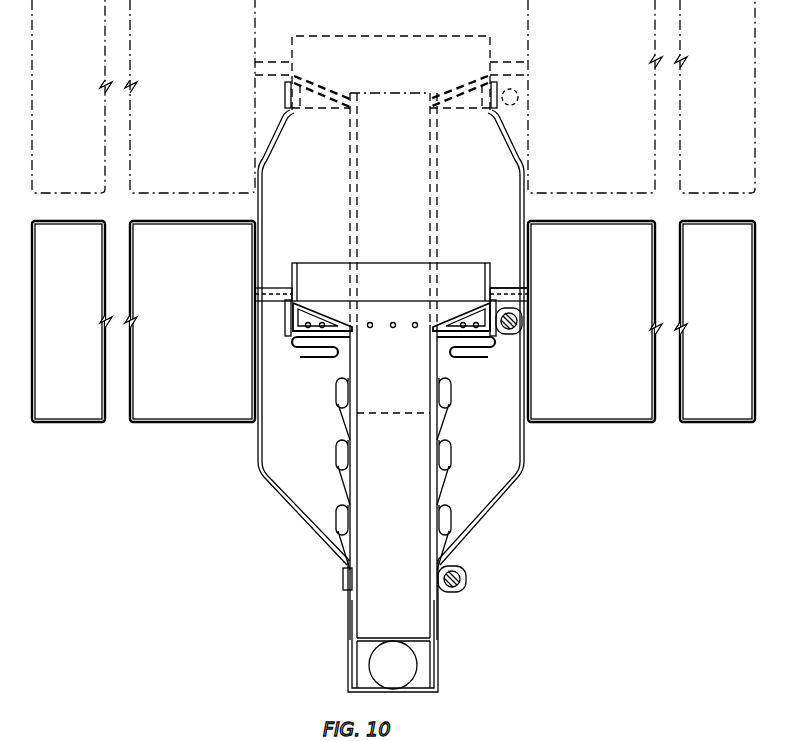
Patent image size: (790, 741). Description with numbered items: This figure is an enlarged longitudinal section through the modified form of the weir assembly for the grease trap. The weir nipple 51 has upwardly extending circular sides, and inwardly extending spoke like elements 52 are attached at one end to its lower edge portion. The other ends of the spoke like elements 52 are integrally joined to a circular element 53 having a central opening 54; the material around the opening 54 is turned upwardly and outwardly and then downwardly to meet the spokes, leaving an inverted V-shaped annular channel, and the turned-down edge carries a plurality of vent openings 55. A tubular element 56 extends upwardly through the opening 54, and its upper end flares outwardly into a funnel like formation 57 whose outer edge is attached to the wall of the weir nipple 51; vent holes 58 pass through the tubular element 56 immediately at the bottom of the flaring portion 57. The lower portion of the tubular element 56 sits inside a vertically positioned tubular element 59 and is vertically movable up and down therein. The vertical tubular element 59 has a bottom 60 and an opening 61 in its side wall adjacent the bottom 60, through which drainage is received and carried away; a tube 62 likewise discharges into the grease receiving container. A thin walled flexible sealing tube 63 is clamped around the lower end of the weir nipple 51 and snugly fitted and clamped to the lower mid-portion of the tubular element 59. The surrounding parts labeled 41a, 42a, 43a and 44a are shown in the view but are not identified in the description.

The end panel 41a is at (701, 422).
The end panel 42a is at (177, 422).
The side bar 43a is at (270, 290).
The side bar 44a is at (520, 290).
The weir nipple 51 is at (492, 290).
The spoke like elements 52 is at (460, 342).
The circular element 53 is at (340, 328).
The opening 54 is at (345, 356).
The vent openings 55 is at (460, 322).
The tubular element 56 is at (435, 386).
The funnel like formation 57 is at (342, 318).
The vent holes 58 is at (393, 327).
The vertical tubular element 59 is at (440, 661).
The bottom 60 is at (418, 693).
The opening 61 is at (369, 661).
The tube 62 is at (415, 652).
The sealing tube 63 is at (522, 484).